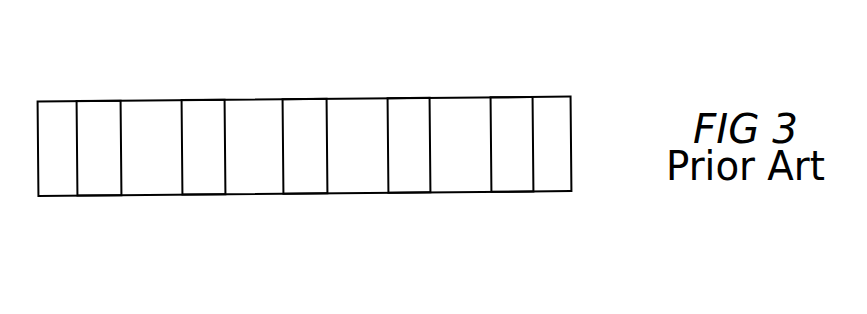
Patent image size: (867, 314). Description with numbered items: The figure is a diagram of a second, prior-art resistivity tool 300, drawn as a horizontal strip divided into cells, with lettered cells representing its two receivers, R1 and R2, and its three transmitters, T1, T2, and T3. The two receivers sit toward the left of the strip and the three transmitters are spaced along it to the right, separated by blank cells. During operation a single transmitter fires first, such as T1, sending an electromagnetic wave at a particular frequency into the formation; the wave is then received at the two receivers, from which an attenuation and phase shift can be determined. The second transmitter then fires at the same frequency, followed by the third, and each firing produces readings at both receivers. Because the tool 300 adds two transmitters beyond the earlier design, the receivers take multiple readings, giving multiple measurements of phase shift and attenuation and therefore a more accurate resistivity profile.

The resistivity tool 300 is at (354, 78).